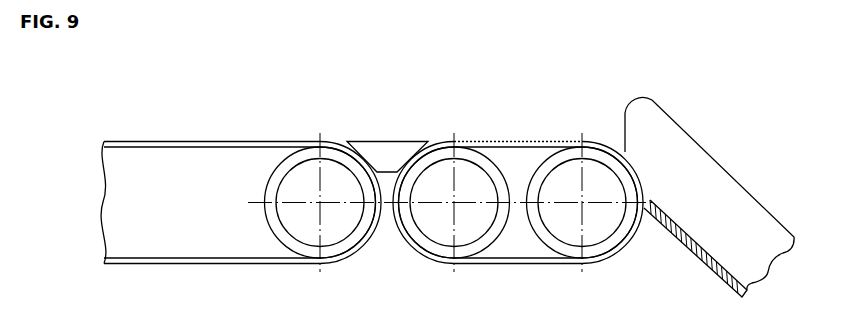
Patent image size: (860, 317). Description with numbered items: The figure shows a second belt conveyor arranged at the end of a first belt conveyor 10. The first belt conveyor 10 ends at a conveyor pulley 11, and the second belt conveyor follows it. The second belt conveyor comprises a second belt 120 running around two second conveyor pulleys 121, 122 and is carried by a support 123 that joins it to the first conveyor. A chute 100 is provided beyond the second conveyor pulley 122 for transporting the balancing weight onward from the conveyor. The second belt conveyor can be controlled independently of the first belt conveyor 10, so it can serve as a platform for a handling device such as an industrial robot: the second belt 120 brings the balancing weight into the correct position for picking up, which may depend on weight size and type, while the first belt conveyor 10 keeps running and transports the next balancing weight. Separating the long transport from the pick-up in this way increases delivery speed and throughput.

The belt conveyor 10 is at (200, 142).
The conveyor pulley 11 is at (307, 187).
The chute 100 is at (718, 195).
The second belt 120 is at (515, 147).
The second conveyor pulley 121 is at (440, 188).
The second conveyor pulley 122 is at (598, 187).
The support 123 is at (380, 147).